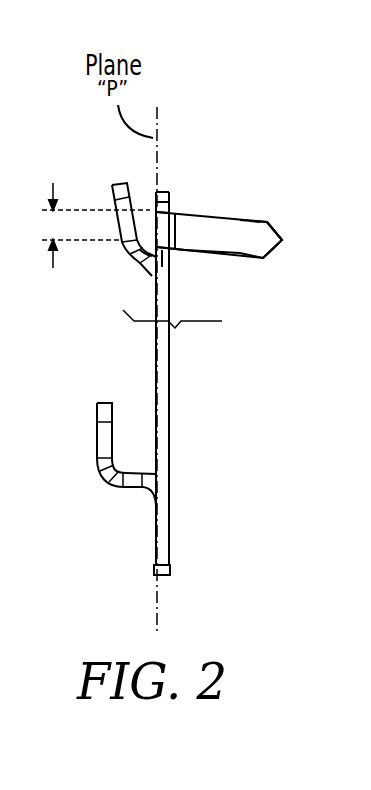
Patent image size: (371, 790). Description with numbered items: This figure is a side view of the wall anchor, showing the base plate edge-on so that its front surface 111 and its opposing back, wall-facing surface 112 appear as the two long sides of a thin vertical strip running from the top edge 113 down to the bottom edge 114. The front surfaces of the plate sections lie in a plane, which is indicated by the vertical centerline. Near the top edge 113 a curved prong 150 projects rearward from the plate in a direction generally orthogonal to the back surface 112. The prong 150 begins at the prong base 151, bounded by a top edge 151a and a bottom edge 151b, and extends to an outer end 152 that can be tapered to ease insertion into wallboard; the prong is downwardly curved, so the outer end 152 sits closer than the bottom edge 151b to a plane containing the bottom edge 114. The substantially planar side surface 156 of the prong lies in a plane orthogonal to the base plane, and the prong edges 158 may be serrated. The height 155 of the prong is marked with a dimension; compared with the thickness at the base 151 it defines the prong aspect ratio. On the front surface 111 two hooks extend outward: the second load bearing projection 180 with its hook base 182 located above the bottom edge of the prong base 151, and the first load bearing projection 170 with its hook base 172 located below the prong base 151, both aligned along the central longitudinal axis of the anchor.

The front surface 111 is at (156, 340).
The back, wall-facing surface 112 is at (169, 400).
The top edge 113 is at (160, 191).
The bottom edge 114 is at (162, 577).
The curved prong 150 is at (265, 232).
The prong base 151 is at (165, 230).
The top edge of prong base 151a is at (165, 208).
The bottom edge of prong base 151b is at (165, 256).
The outer end 152 is at (281, 241).
The height 155 is at (95, 225).
The side surface 156 is at (205, 239).
The edge of the prong 158 is at (253, 221).
The first load bearing projection 170 is at (97, 410).
The hook base 172 is at (131, 487).
The second load bearing projection 180 is at (112, 193).
The hook base 182 is at (151, 256).